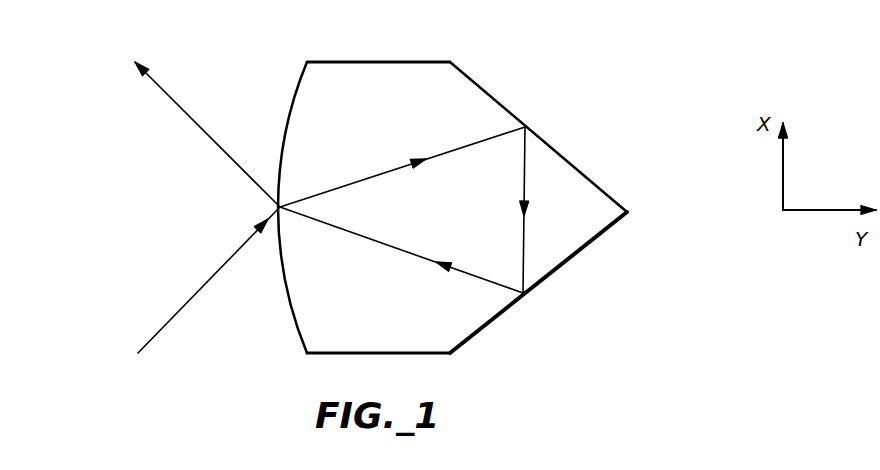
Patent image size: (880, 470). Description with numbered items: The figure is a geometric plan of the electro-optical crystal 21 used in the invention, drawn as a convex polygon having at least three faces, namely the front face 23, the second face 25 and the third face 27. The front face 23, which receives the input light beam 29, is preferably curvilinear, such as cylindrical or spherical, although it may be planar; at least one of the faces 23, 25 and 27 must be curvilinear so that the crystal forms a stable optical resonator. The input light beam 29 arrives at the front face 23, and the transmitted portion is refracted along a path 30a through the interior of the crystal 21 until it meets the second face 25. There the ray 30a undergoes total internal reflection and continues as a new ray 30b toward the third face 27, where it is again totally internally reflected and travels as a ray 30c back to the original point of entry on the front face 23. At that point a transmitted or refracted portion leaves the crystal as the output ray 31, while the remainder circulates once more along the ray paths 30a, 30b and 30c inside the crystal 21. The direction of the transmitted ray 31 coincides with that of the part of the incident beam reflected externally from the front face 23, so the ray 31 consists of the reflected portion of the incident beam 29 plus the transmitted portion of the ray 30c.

The electro-optical crystal 21 is at (472, 95).
The front face 23 is at (273, 147).
The second face 25 is at (562, 140).
The third face 27 is at (547, 288).
The input light beam 29 is at (180, 308).
The transmitted ray 31 is at (185, 110).
The refracted ray path 30a is at (363, 178).
The reflected ray 30b is at (520, 245).
The reflected ray 30c is at (377, 242).